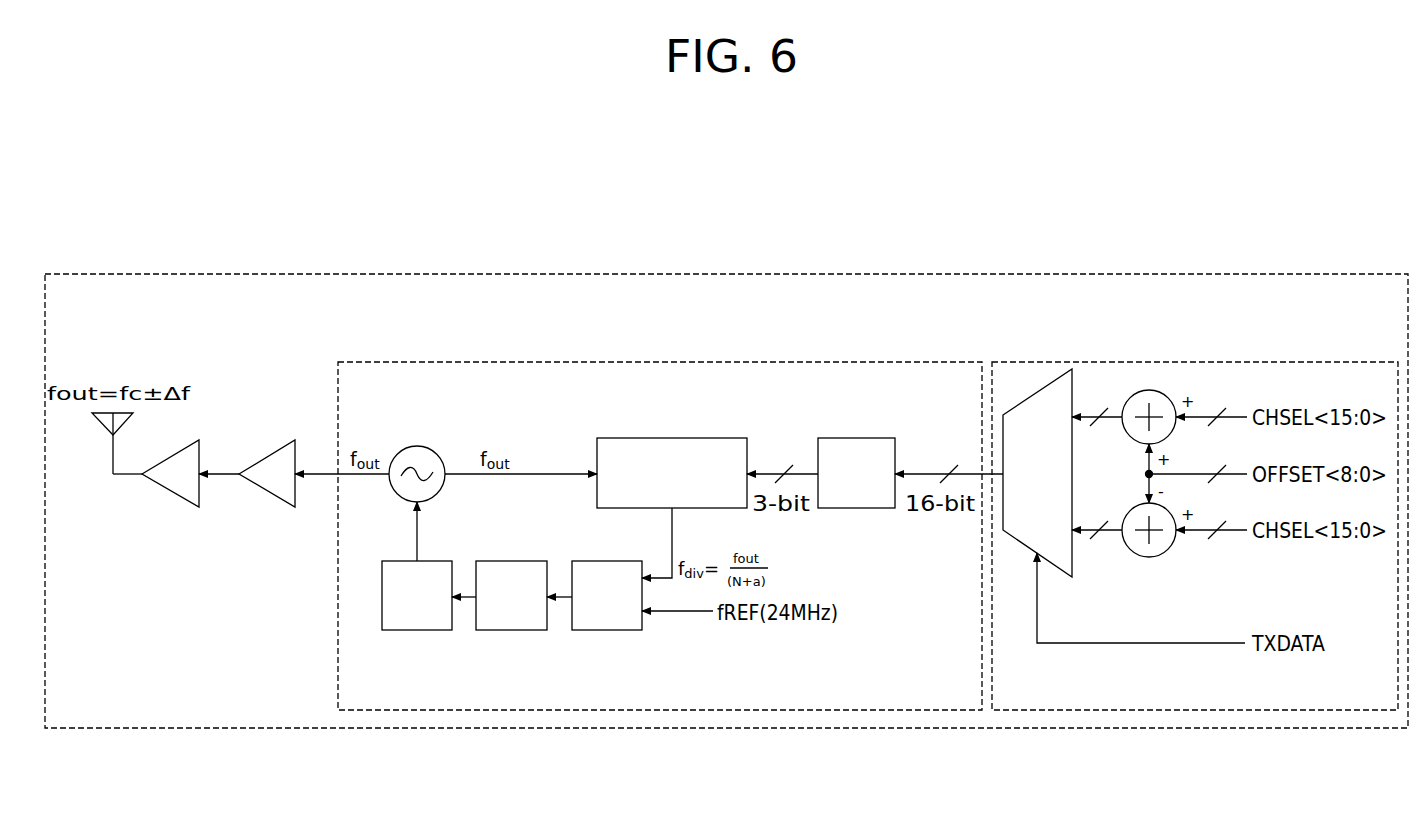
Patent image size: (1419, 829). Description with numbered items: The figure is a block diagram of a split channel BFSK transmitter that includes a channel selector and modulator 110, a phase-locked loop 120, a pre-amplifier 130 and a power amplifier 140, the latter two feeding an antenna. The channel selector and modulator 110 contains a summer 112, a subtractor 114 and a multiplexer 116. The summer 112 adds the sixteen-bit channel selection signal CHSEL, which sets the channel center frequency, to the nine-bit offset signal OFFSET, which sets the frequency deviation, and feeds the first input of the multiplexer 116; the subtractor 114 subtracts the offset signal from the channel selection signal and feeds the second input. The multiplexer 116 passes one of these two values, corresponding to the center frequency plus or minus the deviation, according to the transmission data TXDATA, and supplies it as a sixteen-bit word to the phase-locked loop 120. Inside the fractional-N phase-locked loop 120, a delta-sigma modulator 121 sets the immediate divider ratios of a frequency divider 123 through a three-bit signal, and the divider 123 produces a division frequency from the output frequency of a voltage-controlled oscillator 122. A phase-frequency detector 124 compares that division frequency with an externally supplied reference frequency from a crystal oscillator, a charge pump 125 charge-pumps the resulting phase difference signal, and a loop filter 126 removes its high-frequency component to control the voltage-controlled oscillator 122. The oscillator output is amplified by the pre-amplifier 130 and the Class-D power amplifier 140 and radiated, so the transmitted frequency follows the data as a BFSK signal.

The channel selector and modulator 110 is at (1295, 362).
The summer 112 is at (1149, 390).
The subtractor 114 is at (1146, 557).
The multiplexer 116 is at (1040, 390).
The phase-locked loop 120 is at (668, 362).
The delta-sigma modulator 121 is at (855, 438).
The voltage-controlled oscillator 122 is at (440, 455).
The frequency divider 123 is at (670, 438).
The phase-frequency detector 124 is at (603, 630).
The charge pump 125 is at (511, 630).
The loop filter 126 is at (417, 630).
The pre-amplifier 130 is at (295, 450).
The power amplifier 140 is at (199, 450).